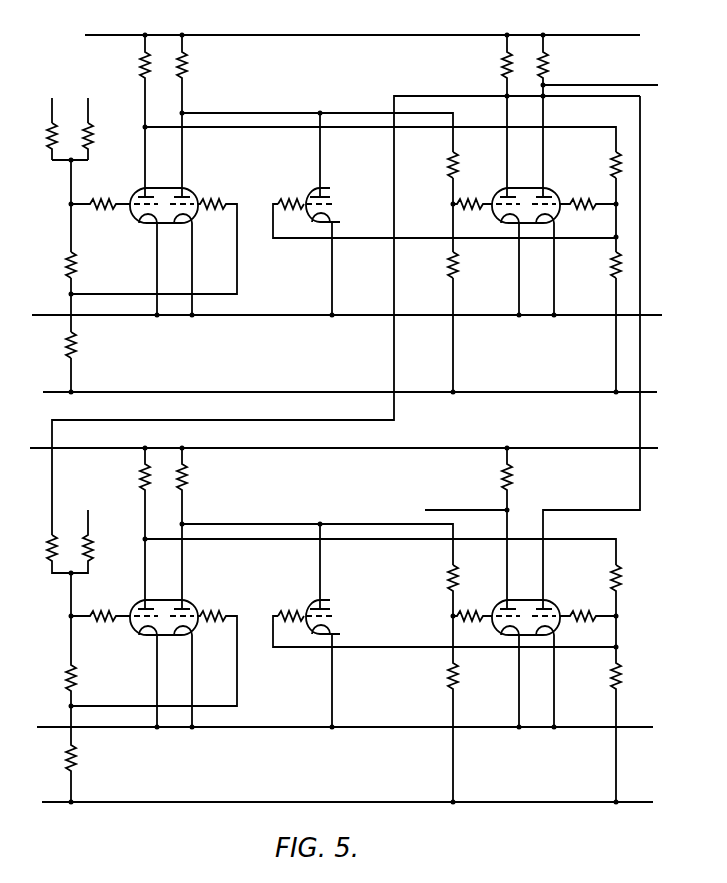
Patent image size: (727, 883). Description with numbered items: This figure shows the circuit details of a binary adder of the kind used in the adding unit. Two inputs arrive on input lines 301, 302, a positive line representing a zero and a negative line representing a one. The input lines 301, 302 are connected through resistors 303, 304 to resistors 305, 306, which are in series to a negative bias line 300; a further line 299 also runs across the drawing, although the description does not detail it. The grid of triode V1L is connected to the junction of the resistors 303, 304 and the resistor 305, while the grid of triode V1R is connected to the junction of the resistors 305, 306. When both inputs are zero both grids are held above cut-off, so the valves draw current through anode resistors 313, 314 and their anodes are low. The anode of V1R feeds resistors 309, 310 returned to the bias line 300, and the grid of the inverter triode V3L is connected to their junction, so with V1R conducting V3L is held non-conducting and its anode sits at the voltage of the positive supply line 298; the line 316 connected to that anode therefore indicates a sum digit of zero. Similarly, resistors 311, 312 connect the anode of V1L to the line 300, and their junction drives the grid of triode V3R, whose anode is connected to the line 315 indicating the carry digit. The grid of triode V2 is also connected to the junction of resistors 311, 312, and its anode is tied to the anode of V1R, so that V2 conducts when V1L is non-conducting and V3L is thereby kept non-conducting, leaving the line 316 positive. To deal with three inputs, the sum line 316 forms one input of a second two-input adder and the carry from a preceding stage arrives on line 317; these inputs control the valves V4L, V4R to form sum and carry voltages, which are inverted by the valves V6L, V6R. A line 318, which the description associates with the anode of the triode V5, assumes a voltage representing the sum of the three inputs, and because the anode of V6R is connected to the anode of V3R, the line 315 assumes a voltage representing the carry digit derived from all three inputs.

The positive supply line 298 is at (385, 35).
The common cathode bus 299 is at (358, 317).
The negative bias line 300 is at (448, 396).
The input line 301 is at (62, 90).
The input line 302 is at (89, 101).
The resistor 303 is at (52, 152).
The resistor 304 is at (93, 138).
The resistor 305 is at (81, 268).
The resistor 306 is at (79, 355).
The resistor 309 is at (457, 178).
The resistor 310 is at (458, 276).
The resistor 311 is at (610, 162).
The resistor 312 is at (610, 267).
The anode resistor 313 is at (140, 55).
The anode resistor 314 is at (186, 64).
The line 315 is at (568, 84).
The line 316 is at (453, 93).
The line 317 is at (90, 516).
The line 318 is at (457, 506).
The triode V1L is at (128, 217).
The triode V1R is at (198, 217).
The triode V2 is at (308, 195).
The inverter triode V3L is at (491, 217).
The triode V3R is at (557, 217).
The valve V4L is at (128, 629).
The valve V4R is at (198, 629).
The triode V5 is at (308, 608).
The valve V6L is at (491, 629).
The valve V6R is at (557, 629).